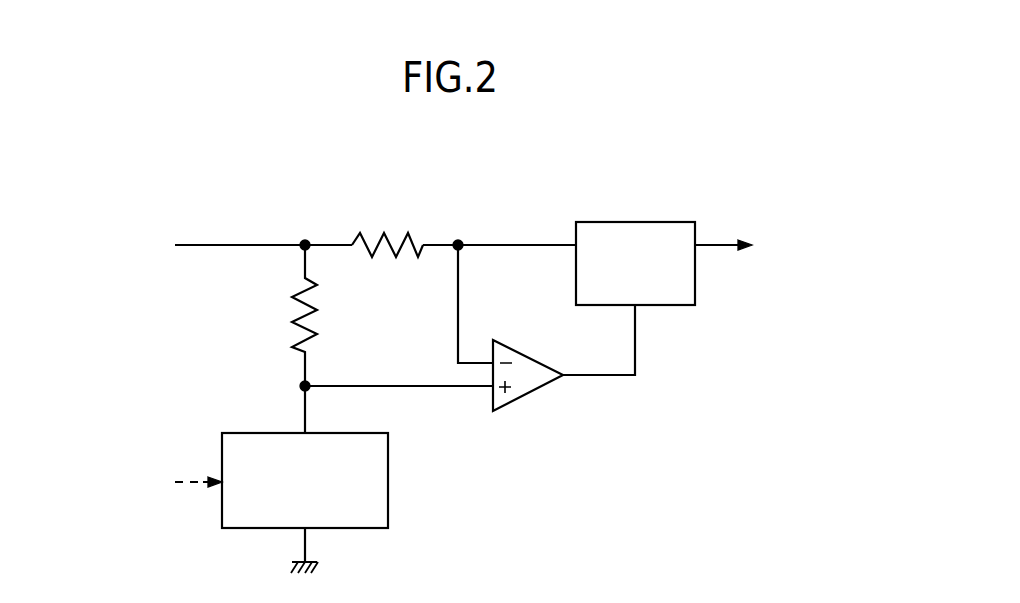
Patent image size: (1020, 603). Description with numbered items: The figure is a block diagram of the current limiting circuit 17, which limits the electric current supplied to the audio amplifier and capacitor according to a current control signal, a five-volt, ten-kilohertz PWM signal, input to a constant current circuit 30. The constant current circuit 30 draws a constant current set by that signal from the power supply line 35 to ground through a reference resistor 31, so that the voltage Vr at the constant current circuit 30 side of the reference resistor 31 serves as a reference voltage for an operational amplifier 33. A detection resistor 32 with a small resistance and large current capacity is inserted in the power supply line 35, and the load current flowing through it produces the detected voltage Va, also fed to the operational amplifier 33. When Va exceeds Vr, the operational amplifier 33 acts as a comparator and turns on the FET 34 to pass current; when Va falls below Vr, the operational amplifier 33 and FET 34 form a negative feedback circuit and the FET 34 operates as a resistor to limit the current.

The current limiting circuit 17 is at (713, 162).
The constant current circuit 30 is at (389, 446).
The reference resistor 31 is at (320, 316).
The detection resistor 32 is at (417, 243).
The operational amplifier 33 is at (519, 350).
The FET 34 is at (695, 222).
The power supply line 35 is at (258, 243).